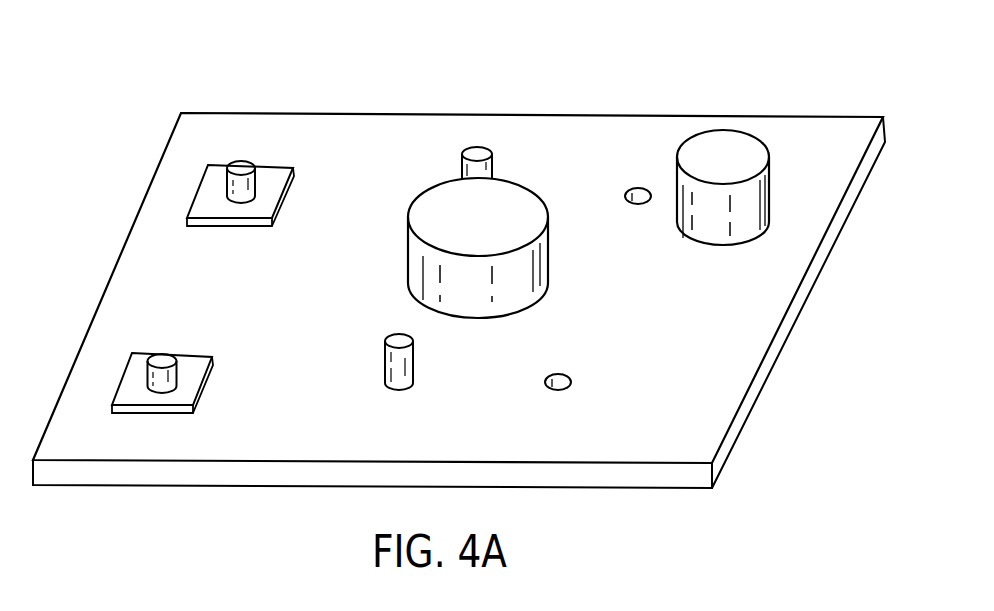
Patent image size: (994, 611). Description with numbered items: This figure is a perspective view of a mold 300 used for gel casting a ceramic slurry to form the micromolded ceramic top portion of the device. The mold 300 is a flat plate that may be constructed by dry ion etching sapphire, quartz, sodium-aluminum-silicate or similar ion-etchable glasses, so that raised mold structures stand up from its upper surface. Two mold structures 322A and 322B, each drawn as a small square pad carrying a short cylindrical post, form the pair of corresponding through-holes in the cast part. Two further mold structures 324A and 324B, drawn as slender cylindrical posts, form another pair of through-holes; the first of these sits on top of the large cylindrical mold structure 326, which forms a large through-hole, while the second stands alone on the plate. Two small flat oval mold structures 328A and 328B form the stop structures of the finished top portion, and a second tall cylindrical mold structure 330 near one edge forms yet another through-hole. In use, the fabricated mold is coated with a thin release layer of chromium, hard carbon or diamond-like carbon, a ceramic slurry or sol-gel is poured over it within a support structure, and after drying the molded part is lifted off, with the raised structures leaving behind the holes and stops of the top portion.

The mold 300 is at (738, 88).
The mold structure 322A is at (233, 187).
The mold structure 322B is at (164, 357).
The mold structure 324A is at (478, 152).
The mold structure 324B is at (398, 362).
The mold structure 326 is at (432, 270).
The mold structure 328A is at (632, 203).
The mold structure 328B is at (571, 376).
The mold structure 330 is at (720, 230).